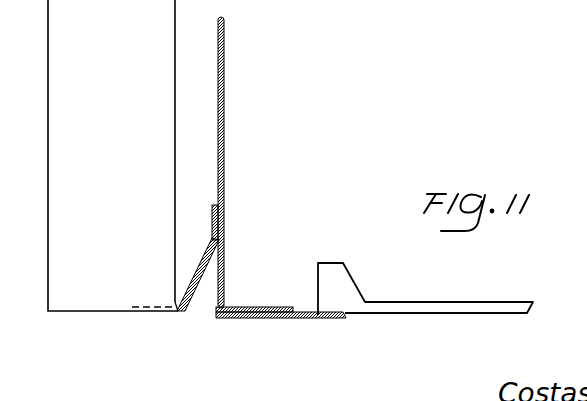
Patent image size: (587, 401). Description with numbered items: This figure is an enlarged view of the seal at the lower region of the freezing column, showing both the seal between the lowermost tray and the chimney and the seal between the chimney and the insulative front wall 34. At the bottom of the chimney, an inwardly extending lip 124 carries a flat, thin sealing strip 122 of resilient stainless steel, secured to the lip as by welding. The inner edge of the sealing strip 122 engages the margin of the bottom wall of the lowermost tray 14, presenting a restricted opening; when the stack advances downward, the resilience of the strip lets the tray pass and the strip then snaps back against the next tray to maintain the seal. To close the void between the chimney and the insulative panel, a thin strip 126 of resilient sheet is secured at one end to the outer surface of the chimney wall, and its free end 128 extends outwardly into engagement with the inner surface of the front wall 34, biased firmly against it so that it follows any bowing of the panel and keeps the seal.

The insulative front wall 34 is at (126, 141).
The tray 14 is at (331, 261).
The sealing strip 122 is at (308, 318).
The inwardly extending lip 124 is at (253, 308).
The strip of resilient sheet 126 is at (193, 290).
The free end 128 is at (186, 312).